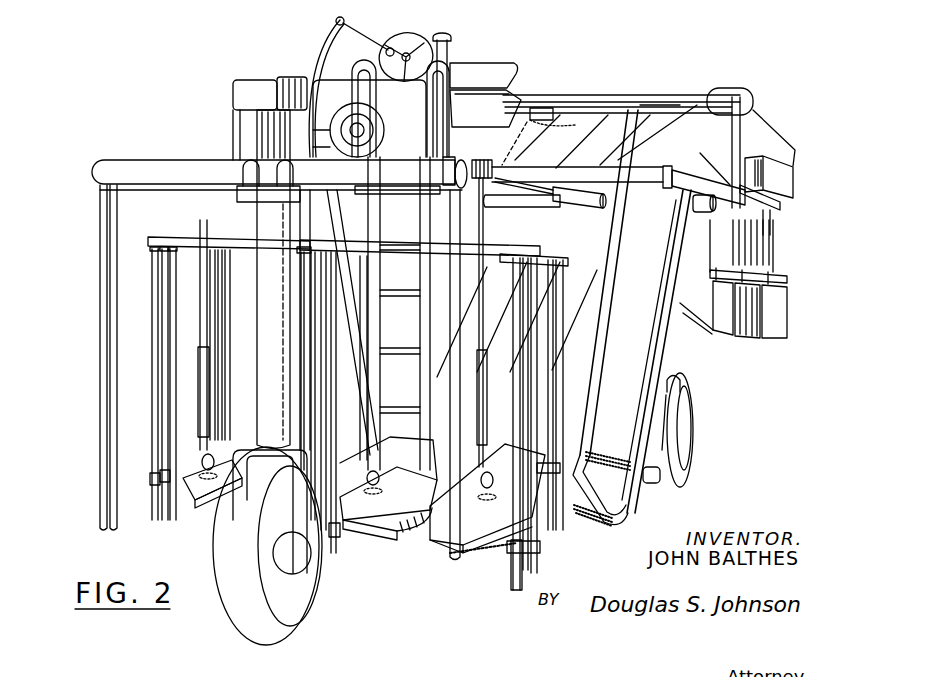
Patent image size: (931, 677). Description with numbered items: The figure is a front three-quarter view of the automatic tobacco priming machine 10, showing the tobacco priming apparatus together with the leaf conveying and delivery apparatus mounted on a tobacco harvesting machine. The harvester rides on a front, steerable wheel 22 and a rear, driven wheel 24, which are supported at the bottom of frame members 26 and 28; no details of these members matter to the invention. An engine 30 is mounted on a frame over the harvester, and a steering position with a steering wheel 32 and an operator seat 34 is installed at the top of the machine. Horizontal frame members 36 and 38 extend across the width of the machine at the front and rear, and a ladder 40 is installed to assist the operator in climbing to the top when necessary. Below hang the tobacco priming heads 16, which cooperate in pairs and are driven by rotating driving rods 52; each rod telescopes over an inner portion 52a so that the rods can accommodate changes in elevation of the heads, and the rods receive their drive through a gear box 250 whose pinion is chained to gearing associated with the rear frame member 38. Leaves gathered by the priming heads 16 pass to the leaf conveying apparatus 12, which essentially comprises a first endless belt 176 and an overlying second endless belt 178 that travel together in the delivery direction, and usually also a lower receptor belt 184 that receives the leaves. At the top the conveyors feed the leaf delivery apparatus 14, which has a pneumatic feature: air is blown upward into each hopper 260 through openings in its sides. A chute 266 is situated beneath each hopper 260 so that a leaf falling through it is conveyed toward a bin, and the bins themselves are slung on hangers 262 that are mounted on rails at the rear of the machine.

The automatic tobacco priming machine 10 is at (128, 110).
The leaf conveying apparatus 12 is at (688, 353).
The leaf delivery apparatus 14 is at (792, 128).
The tobacco priming heads 16 is at (377, 556).
The front steerable wheel 22 is at (232, 607).
The rear driven wheel 24 is at (690, 470).
The frame member 26 is at (268, 321).
The frame member 28 is at (683, 379).
The engine 30 is at (332, 77).
The steering wheel 32 is at (410, 30).
The operator seat 34 is at (490, 68).
The horizontal frame member 36 is at (183, 176).
The horizontal frame member 38 is at (583, 205).
The ladder 40 is at (350, 236).
The driving rods 52 is at (207, 373).
The inner portion of drive rod 52a is at (197, 213).
The first endless belt 176 is at (605, 458).
The second endless belt 178 is at (658, 329).
The receptor belt 184 is at (598, 508).
The gear box 250 is at (493, 160).
The hopper 260 is at (780, 157).
The hangers 262 is at (787, 328).
The chute 266 is at (750, 243).